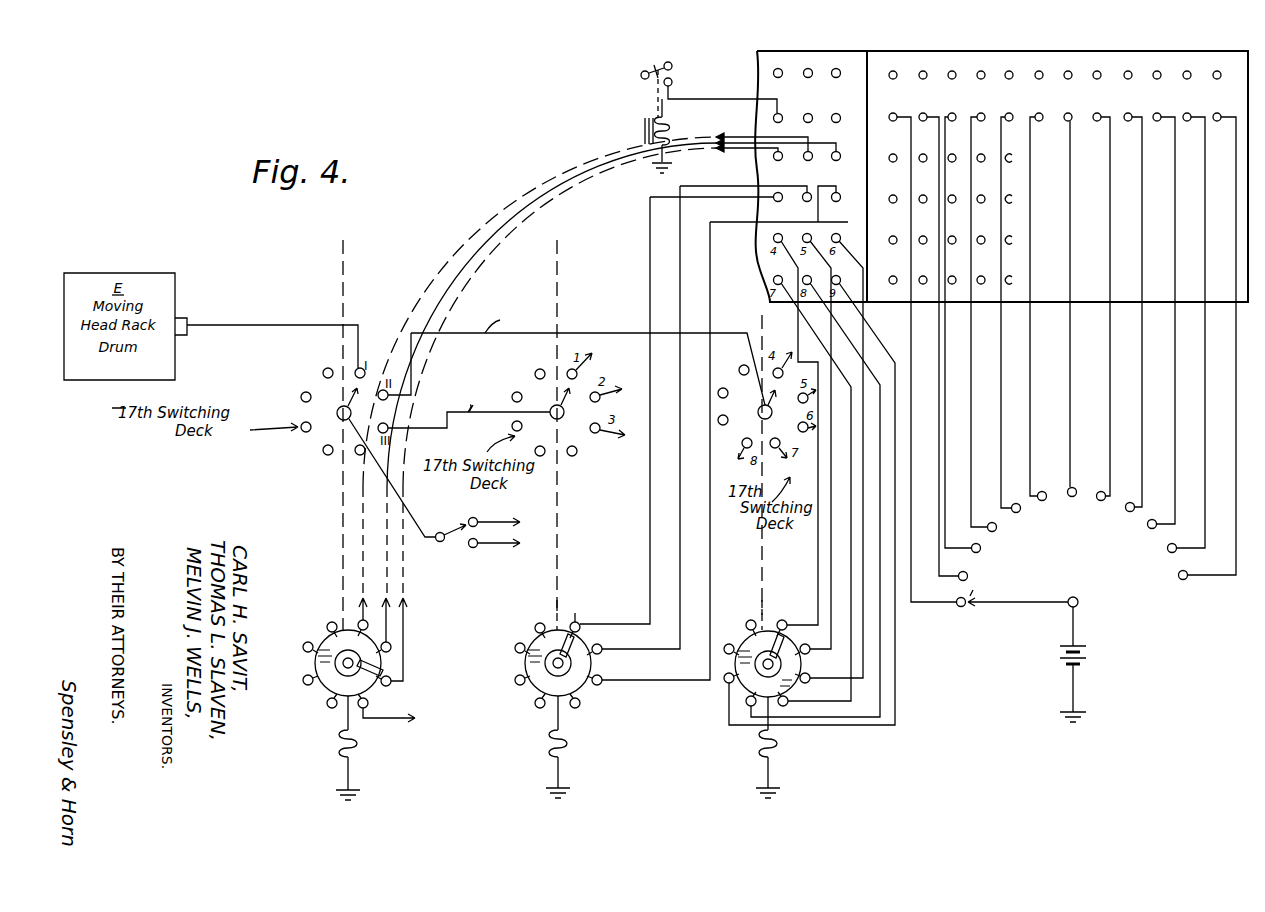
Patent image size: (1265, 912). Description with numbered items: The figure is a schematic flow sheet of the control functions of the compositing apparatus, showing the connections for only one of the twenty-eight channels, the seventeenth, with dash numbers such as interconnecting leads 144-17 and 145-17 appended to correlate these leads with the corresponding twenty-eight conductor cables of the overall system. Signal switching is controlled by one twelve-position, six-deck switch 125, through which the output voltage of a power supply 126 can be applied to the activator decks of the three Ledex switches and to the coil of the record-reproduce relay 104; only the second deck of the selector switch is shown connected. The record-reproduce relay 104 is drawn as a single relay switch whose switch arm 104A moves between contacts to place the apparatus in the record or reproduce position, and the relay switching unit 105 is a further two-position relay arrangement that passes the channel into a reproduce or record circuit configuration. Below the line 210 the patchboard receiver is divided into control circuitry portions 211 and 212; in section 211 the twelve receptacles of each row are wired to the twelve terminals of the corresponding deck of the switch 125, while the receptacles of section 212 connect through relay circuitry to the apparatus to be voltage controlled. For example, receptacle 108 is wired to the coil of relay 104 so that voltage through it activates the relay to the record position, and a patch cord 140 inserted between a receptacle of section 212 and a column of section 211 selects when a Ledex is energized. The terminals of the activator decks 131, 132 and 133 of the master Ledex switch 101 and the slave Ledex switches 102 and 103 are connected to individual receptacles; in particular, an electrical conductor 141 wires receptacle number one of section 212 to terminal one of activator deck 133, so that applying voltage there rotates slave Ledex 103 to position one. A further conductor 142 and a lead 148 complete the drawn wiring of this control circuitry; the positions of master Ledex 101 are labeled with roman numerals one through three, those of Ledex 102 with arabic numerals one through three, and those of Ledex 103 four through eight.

The switch arm 104A is at (692, 82).
The record-reproduce relay 104 is at (629, 121).
The receptacle 108 is at (783, 113).
The control circuitry portion of the patchboard 212 is at (780, 48).
The line 210 is at (1130, 50).
The control circuitry portion of the patchboard 211 is at (930, 319).
The patch cord 140 is at (752, 220).
The interconnecting lead 144-17 is at (306, 322).
The interconnecting lead 145-17 is at (407, 528).
The relay switching unit 105 is at (466, 557).
The electrical conductor 141 is at (652, 498).
The conductor 142 is at (710, 567).
The activator deck 131 is at (335, 645).
The activator deck 133 is at (525, 654).
The activator deck 132 is at (765, 642).
The wire to F 148 is at (378, 720).
The master Ledex switch 101 is at (319, 748).
The slave Ledex switch 103 is at (505, 747).
The slave Ledex switch 102 is at (717, 747).
The power supply 126 is at (1067, 659).
The twelve-position, six-deck switch 125 is at (1089, 590).